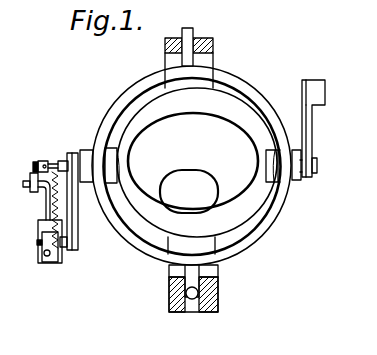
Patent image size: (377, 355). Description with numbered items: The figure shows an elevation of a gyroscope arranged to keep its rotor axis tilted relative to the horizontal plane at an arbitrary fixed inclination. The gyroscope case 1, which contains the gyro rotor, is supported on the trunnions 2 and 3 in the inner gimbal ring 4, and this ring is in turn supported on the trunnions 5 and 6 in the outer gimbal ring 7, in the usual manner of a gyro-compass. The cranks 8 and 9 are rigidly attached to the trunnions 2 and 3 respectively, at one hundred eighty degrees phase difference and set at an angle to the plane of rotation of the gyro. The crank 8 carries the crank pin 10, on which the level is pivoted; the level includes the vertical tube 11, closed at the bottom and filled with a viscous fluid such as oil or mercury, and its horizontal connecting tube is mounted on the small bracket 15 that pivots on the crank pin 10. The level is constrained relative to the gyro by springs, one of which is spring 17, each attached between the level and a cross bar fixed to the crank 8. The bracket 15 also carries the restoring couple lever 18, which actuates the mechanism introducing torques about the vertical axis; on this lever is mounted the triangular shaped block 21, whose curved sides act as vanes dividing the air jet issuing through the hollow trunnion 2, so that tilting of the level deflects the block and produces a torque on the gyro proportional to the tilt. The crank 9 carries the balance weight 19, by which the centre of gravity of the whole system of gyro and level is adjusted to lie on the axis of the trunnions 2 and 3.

The gyroscope case 1 is at (232, 112).
The trunnion 2 is at (78, 153).
The trunnion 3 is at (296, 150).
The inner gimbal ring 4 is at (150, 80).
The trunnion 5 is at (194, 30).
The trunnion 6 is at (199, 270).
The outer gimbal ring 7 is at (213, 47).
The crank 8 is at (76, 222).
The crank 9 is at (313, 143).
The crank pin 10 is at (66, 246).
The vertical tube 11 is at (40, 257).
The bracket 15 is at (58, 252).
The spring 17 is at (53, 173).
The restoring couple lever 18 is at (43, 191).
The balance weight 19 is at (318, 93).
The triangular shaped block 21 is at (46, 148).